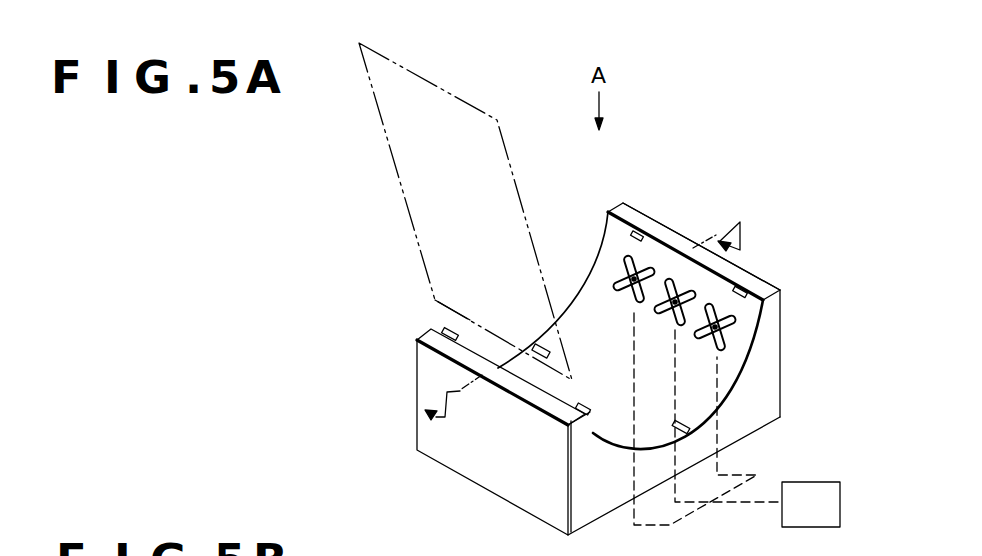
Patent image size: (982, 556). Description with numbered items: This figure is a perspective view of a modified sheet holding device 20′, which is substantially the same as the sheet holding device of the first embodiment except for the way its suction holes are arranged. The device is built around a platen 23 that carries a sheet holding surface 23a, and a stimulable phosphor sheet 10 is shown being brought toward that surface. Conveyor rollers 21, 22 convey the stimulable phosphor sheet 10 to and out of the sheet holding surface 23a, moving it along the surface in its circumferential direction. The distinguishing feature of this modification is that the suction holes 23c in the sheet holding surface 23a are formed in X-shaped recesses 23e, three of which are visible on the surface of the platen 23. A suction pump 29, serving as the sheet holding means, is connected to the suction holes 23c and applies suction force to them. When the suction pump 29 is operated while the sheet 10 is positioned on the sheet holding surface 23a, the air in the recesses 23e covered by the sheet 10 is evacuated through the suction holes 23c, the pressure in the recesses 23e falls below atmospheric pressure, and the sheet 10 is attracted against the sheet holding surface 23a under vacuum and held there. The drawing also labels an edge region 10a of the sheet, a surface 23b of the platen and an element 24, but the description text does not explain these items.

The stimulable phosphor sheet 10 is at (384, 138).
The sheet lower edge 10a is at (432, 297).
The sheet holding device 20′ is at (781, 252).
The conveyor roller 21 is at (445, 330).
The conveyor roller 22 is at (683, 425).
The platen 23 is at (776, 310).
The sheet holding surface 23a is at (730, 366).
The top surface 23b is at (640, 228).
The suction holes 23c is at (630, 280).
The X-shaped recesses 23e is at (603, 245).
The tab 24 is at (592, 413).
The suction pump 29 is at (811, 504).